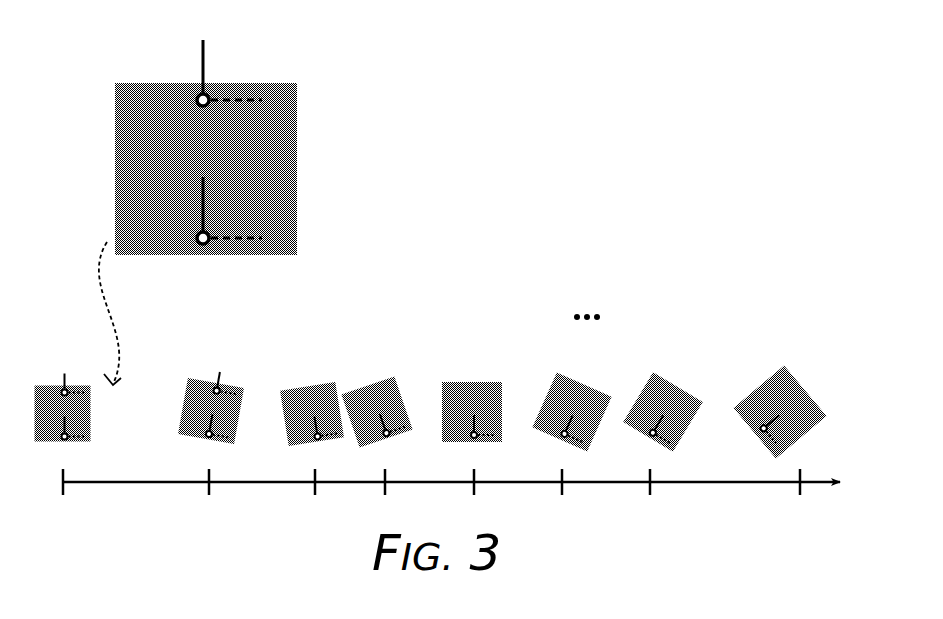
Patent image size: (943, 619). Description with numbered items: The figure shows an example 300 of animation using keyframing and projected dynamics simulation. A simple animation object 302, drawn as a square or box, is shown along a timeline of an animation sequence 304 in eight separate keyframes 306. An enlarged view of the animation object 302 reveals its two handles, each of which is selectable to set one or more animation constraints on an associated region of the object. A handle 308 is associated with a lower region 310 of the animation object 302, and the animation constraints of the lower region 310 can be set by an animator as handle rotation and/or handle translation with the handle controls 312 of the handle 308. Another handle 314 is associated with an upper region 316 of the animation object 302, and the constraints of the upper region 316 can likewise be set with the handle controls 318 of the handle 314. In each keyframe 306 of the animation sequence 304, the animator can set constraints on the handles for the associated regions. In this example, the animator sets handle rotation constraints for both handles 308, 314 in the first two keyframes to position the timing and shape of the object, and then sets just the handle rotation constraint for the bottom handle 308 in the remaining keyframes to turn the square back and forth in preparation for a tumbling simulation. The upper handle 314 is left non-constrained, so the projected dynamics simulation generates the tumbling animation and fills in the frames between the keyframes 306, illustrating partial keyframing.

The example of animation using keyframing and projected dynamics simulation 300 is at (592, 176).
The animation object 302 is at (304, 133).
The timeline of an animation sequence 304 is at (145, 483).
The keyframes 306 is at (373, 360).
The handle 308 is at (210, 246).
The lower region 310 is at (157, 252).
The handle controls 312 is at (222, 198).
The handle 314 is at (197, 92).
The upper region 316 is at (140, 84).
The handle controls 318 is at (210, 72).